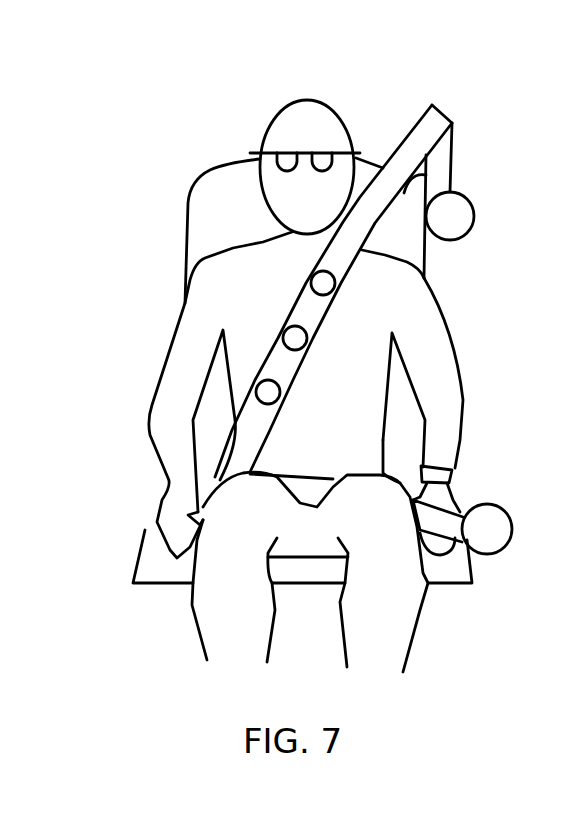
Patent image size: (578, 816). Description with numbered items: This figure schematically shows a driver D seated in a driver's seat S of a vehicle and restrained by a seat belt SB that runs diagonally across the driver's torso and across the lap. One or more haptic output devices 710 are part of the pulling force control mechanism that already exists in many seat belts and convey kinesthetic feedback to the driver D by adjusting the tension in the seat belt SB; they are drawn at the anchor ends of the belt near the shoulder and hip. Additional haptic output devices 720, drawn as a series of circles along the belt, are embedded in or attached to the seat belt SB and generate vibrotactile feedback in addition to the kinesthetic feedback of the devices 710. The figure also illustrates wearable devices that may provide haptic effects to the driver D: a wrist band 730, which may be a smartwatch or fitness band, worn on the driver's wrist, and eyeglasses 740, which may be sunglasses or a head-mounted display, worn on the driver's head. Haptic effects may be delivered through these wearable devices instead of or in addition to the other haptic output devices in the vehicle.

The driver's seat S is at (185, 212).
The driver D is at (167, 337).
The seat belt SB is at (473, 160).
The haptic output device 710 is at (458, 238).
The haptic output device 720 is at (335, 289).
The wrist band 730 is at (455, 472).
The eyeglasses 740 is at (260, 155).